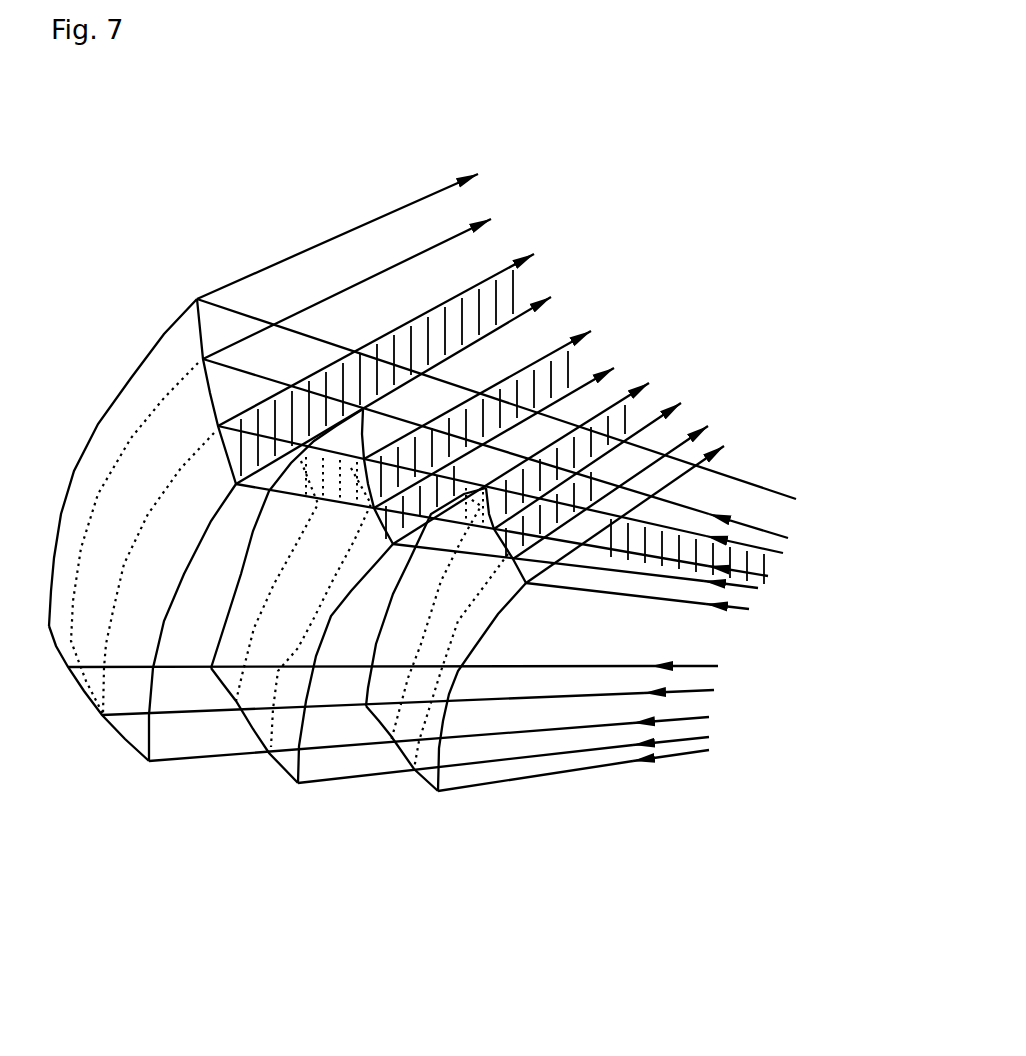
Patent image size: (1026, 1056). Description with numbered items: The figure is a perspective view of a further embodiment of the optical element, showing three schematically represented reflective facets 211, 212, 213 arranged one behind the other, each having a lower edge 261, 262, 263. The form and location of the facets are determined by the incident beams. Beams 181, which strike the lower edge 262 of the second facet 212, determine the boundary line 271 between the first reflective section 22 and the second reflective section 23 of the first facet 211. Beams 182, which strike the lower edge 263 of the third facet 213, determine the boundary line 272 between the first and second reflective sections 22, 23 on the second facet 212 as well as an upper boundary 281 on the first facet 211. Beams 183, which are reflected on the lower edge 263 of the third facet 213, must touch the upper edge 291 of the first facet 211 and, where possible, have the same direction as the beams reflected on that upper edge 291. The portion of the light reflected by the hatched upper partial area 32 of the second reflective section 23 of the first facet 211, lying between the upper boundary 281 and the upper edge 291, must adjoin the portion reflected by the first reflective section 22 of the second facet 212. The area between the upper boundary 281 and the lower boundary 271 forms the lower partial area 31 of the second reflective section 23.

The beams 181 is at (765, 586).
The beams 182 is at (777, 552).
The beams 183 is at (785, 553).
The first reflective facet 211 is at (428, 795).
The second reflective facet 212 is at (285, 780).
The third reflective facet 213 is at (131, 760).
The first reflective section 22 is at (123, 720).
The second reflective section 23 is at (92, 688).
The lower edge of the first facet 261 is at (452, 617).
The lower edge of the second facet 262 is at (313, 735).
The lower edge of the third facet 263 is at (150, 685).
The boundary line 271 is at (445, 582).
The boundary line 272 is at (302, 603).
The upper boundary 281 is at (622, 610).
The upper edge of the first facet 291 is at (362, 683).
The lower partial area 31 is at (458, 790).
The upper partial area 32 is at (368, 770).